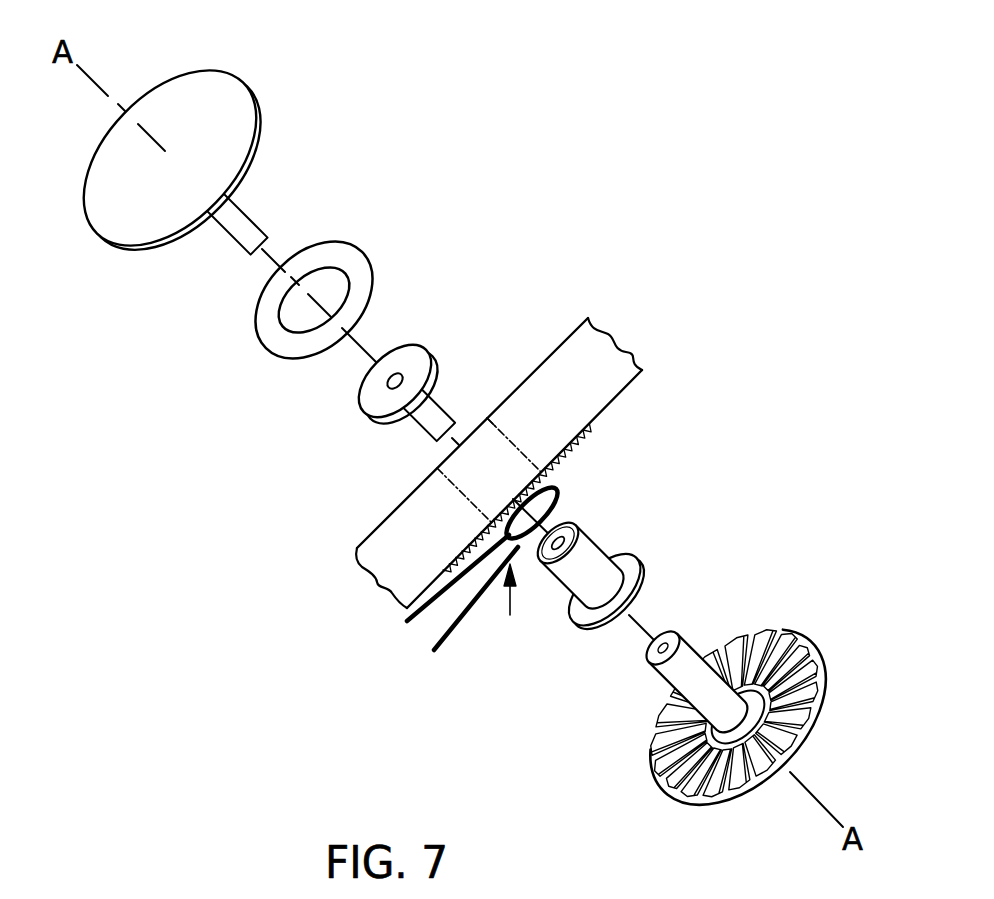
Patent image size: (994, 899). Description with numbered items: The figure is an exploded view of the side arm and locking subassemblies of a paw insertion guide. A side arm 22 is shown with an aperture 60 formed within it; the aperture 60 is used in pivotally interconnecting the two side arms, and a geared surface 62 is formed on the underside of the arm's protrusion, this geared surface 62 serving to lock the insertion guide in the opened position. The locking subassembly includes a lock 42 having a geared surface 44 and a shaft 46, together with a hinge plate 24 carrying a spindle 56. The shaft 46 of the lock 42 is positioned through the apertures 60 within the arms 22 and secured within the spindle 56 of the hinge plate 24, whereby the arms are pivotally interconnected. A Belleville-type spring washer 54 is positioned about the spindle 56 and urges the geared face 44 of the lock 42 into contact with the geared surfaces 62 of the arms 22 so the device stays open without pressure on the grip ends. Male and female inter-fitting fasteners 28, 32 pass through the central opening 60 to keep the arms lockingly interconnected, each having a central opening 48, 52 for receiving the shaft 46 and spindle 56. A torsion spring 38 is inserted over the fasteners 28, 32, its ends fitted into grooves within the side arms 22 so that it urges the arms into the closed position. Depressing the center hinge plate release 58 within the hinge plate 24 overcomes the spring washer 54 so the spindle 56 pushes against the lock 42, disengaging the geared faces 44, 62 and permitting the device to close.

The side arm of insertion guide 22 is at (624, 365).
The hinge plate of side arms 24 is at (242, 108).
The male fastener of lock subassembly 28 is at (606, 556).
The female fastener of lock subassembly 32 is at (436, 405).
The torsion spring 38 is at (436, 652).
The lock of side arms 42 is at (834, 660).
The geared surface of lock 44 is at (666, 781).
The shaft of lock 46 is at (693, 664).
The opening in male fastener 48 is at (591, 626).
The opening in female fastener 52 is at (393, 383).
The spring 54 is at (363, 272).
The spindle on hinge plate 56 is at (222, 226).
The hinge plate release 58 is at (126, 183).
The aperture within side arms 60 is at (480, 425).
The geared surface of side arms 62 is at (591, 428).